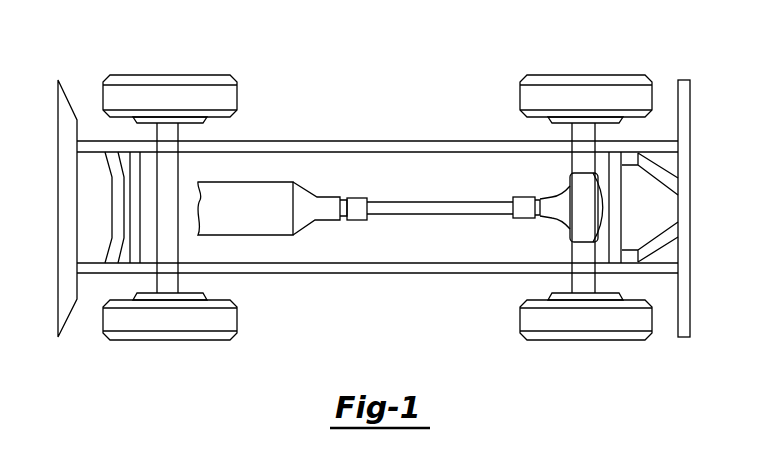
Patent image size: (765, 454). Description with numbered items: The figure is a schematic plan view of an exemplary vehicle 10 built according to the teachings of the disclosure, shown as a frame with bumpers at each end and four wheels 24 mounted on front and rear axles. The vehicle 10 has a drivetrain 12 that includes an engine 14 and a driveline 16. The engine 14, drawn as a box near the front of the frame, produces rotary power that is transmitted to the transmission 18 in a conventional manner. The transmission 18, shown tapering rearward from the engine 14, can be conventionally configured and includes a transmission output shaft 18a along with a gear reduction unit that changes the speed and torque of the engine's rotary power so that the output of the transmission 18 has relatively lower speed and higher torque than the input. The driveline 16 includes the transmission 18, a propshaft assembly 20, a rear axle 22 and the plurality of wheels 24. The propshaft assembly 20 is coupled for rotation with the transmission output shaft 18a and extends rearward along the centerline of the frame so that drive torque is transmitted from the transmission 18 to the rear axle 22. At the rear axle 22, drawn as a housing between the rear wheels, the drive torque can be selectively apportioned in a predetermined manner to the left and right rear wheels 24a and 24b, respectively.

The vehicle 10 is at (334, 91).
The drivetrain 12 is at (536, 193).
The engine 14 is at (248, 218).
The driveline 16 is at (340, 236).
The transmission 18 is at (302, 203).
The transmission output shaft 18a is at (346, 214).
The propshaft assembly 20 is at (416, 205).
The rear axle 22 is at (562, 233).
The wheels 24 is at (147, 344).
The left rear wheel 24a is at (528, 316).
The right rear wheel 24b is at (583, 88).